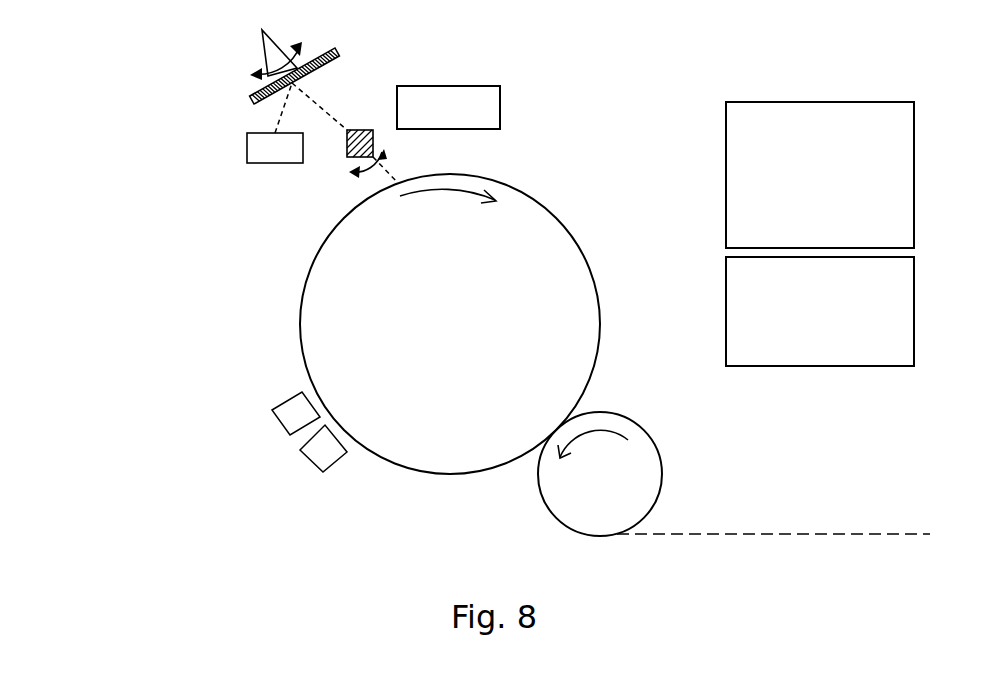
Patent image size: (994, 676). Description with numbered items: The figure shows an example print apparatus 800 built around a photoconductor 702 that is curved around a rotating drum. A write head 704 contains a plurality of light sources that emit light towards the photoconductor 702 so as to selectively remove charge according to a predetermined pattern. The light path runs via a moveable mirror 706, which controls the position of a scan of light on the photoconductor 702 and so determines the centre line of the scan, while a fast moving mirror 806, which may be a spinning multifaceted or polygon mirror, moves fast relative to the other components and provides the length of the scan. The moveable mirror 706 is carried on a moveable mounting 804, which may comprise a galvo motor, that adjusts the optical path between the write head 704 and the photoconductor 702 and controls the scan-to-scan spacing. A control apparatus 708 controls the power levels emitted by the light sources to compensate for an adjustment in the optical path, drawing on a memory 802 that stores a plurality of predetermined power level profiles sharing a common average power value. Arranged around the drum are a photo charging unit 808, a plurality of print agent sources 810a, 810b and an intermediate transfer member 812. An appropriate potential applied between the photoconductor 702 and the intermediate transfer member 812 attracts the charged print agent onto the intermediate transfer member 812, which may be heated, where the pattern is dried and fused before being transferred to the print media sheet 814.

The print apparatus 800 is at (80, 67).
The photoconductor 702 is at (337, 223).
The write head 704 is at (247, 142).
The moveable mirror 706 is at (337, 58).
The control apparatus 708 is at (820, 175).
The memory 802 is at (820, 311).
The moveable mounting 804 is at (266, 53).
The fast moving mirror 806 is at (347, 153).
The photo charging unit 808 is at (448, 107).
The print agent source 810a is at (302, 465).
The print agent source 810b is at (279, 425).
The intermediate transfer member 812 is at (652, 432).
The print media sheet 814 is at (828, 535).